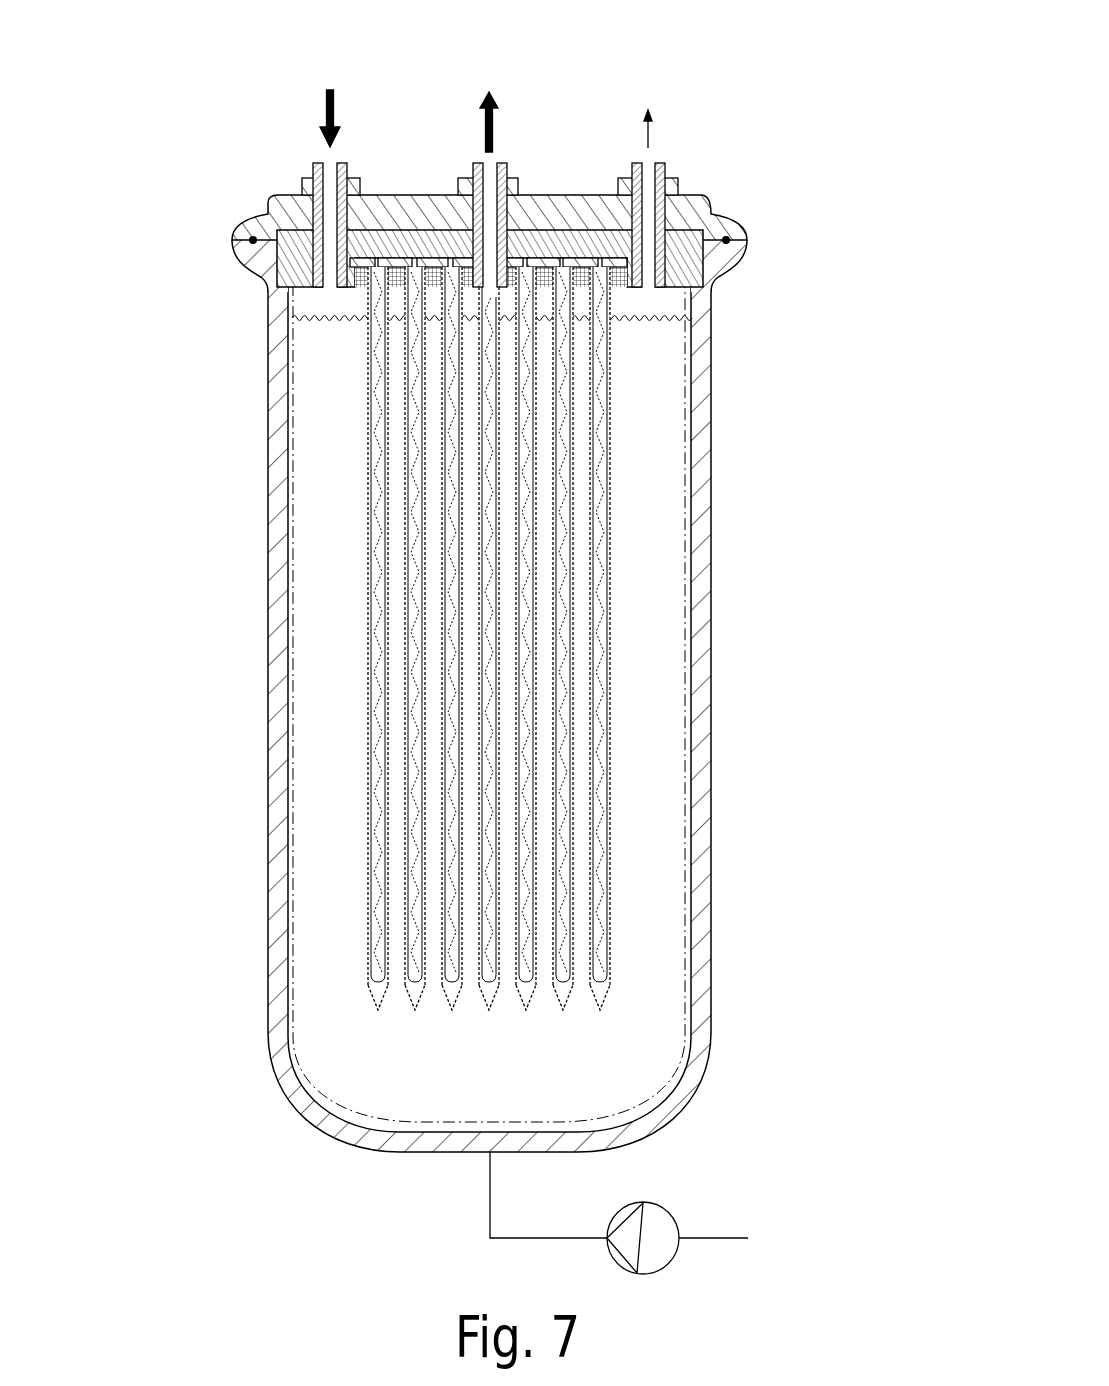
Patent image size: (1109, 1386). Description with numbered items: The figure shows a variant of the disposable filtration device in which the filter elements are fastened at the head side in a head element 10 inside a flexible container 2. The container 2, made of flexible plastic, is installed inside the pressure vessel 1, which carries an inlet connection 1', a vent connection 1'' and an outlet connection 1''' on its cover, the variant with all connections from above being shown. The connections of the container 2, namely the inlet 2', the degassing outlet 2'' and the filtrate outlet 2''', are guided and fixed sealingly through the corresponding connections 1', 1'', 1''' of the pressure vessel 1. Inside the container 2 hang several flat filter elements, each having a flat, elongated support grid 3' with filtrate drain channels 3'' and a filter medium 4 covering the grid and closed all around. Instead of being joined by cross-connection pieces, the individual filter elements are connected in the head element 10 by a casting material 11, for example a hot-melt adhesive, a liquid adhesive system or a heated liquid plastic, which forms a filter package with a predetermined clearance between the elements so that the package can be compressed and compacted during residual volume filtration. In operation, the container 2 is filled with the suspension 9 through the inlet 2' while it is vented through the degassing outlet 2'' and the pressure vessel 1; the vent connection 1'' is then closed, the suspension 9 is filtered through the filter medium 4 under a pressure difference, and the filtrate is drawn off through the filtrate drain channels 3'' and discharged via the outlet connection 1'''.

The pressure vessel 1 is at (423, 264).
The inlet connection 1' is at (279, 128).
The vent connection 1'' is at (717, 128).
The outlet connection 1''' is at (448, 115).
The container 2 is at (602, 704).
The inlet 2' is at (316, 162).
The degassing outlet 2'' is at (685, 164).
The filtrate outlet 2''' is at (472, 148).
The support grid 3' is at (362, 624).
The filtrate drain channels 3'' is at (362, 626).
The filter medium 4 is at (370, 987).
The suspension 9 is at (518, 1092).
The head element 10 is at (640, 247).
The casting material 11 is at (628, 273).